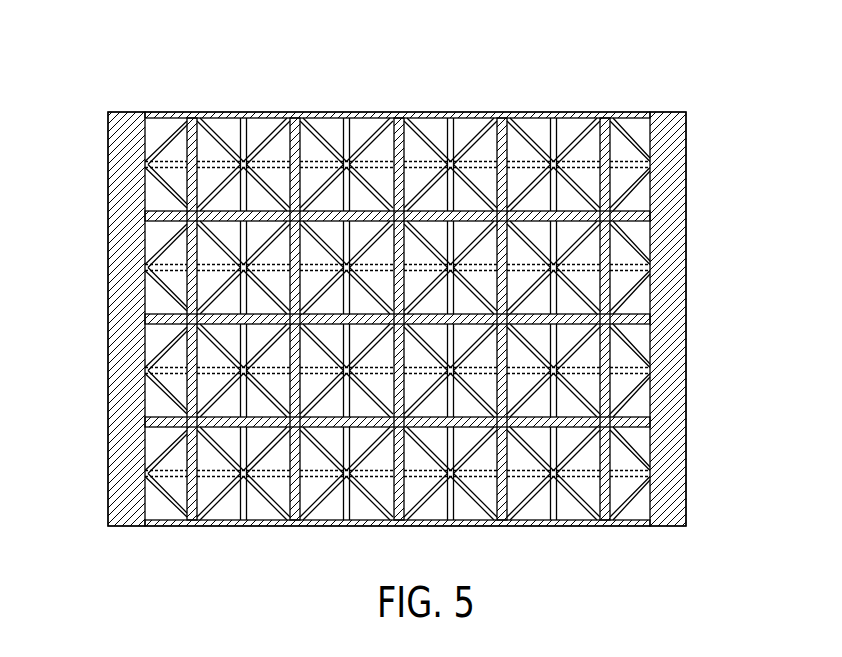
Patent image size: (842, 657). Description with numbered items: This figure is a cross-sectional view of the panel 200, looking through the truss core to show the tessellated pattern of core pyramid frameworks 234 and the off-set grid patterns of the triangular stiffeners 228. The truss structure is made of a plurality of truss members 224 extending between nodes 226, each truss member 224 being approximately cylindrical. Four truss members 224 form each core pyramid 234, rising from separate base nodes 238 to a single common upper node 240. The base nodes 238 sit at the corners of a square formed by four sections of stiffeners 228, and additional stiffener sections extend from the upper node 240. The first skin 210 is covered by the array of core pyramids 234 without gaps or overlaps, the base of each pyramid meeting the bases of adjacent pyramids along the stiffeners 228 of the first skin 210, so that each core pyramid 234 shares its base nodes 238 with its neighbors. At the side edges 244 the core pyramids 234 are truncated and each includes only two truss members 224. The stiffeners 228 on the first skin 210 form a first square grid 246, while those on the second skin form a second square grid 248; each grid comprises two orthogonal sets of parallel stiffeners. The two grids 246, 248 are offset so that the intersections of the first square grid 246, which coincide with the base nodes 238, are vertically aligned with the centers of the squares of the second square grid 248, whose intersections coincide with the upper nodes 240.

The panel 200 is at (105, 82).
The side edges 244 is at (628, 98).
The truss members 224 is at (650, 437).
The core pyramid frameworks 234 is at (214, 532).
The second square grid 248 is at (190, 128).
The upper node 240 is at (188, 318).
The first square grid 246 is at (246, 127).
The first skin 210 is at (527, 127).
The base nodes 238 is at (242, 267).
The nodes 226 is at (632, 194).
The triangular stiffeners 228 is at (627, 370).